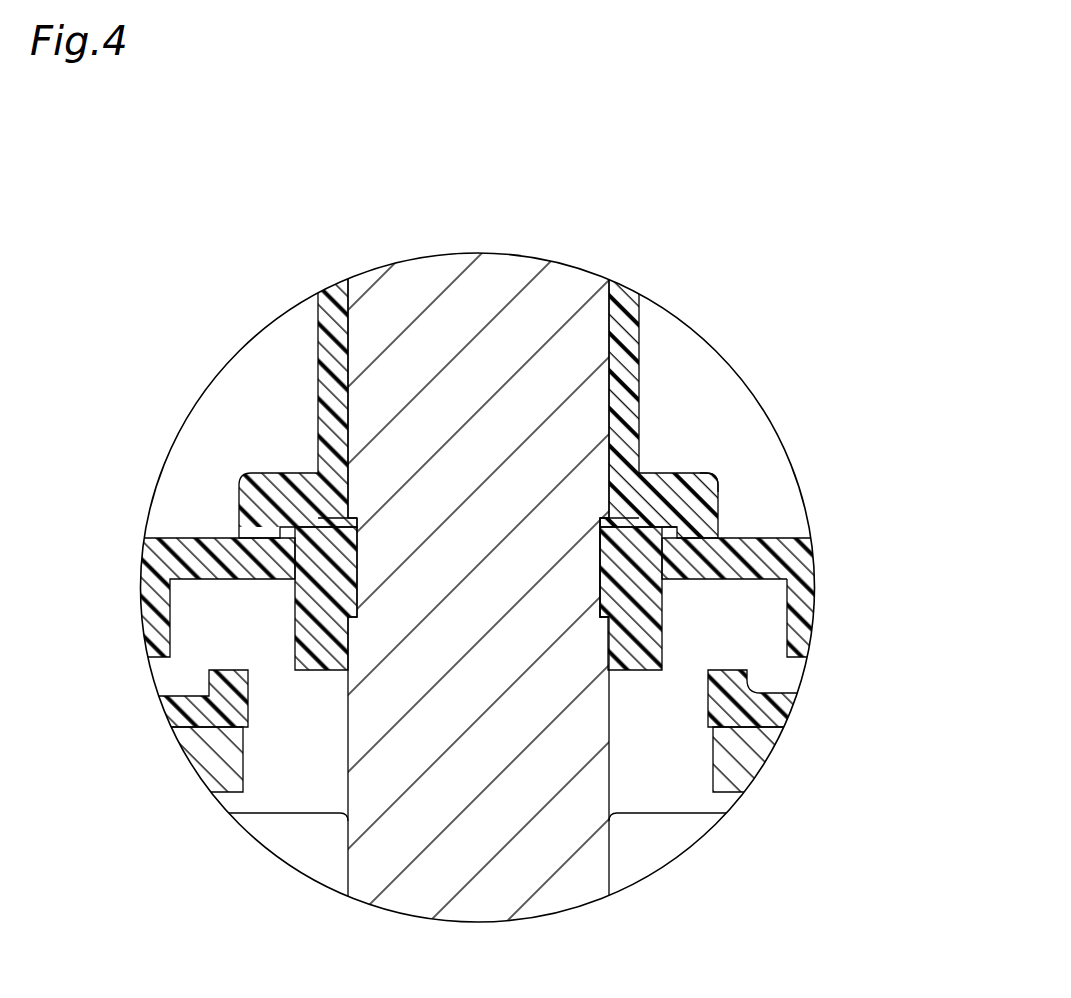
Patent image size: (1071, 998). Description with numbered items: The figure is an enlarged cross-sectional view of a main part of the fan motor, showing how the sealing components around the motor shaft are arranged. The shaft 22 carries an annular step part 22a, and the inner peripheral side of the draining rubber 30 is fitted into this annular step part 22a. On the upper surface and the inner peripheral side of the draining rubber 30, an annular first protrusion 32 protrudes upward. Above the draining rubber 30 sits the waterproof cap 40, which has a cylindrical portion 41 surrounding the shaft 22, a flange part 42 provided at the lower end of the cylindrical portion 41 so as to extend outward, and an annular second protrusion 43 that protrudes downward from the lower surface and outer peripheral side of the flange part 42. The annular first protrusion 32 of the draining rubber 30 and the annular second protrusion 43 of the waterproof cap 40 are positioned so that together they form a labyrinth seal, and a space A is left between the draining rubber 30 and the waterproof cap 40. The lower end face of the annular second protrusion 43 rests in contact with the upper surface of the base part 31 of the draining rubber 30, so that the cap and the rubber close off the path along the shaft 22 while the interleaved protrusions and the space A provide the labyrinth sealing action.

The shaft 22 is at (483, 277).
The annular step part 22a is at (633, 597).
The draining rubber 30 is at (803, 567).
The base part 31 is at (758, 552).
The annular first protrusion 32 is at (635, 532).
The waterproof cap 40 is at (310, 375).
The cylindrical portion 41 is at (640, 293).
The flange part 42 is at (677, 478).
The annular second protrusion 43 is at (700, 528).
The space A is at (716, 482).